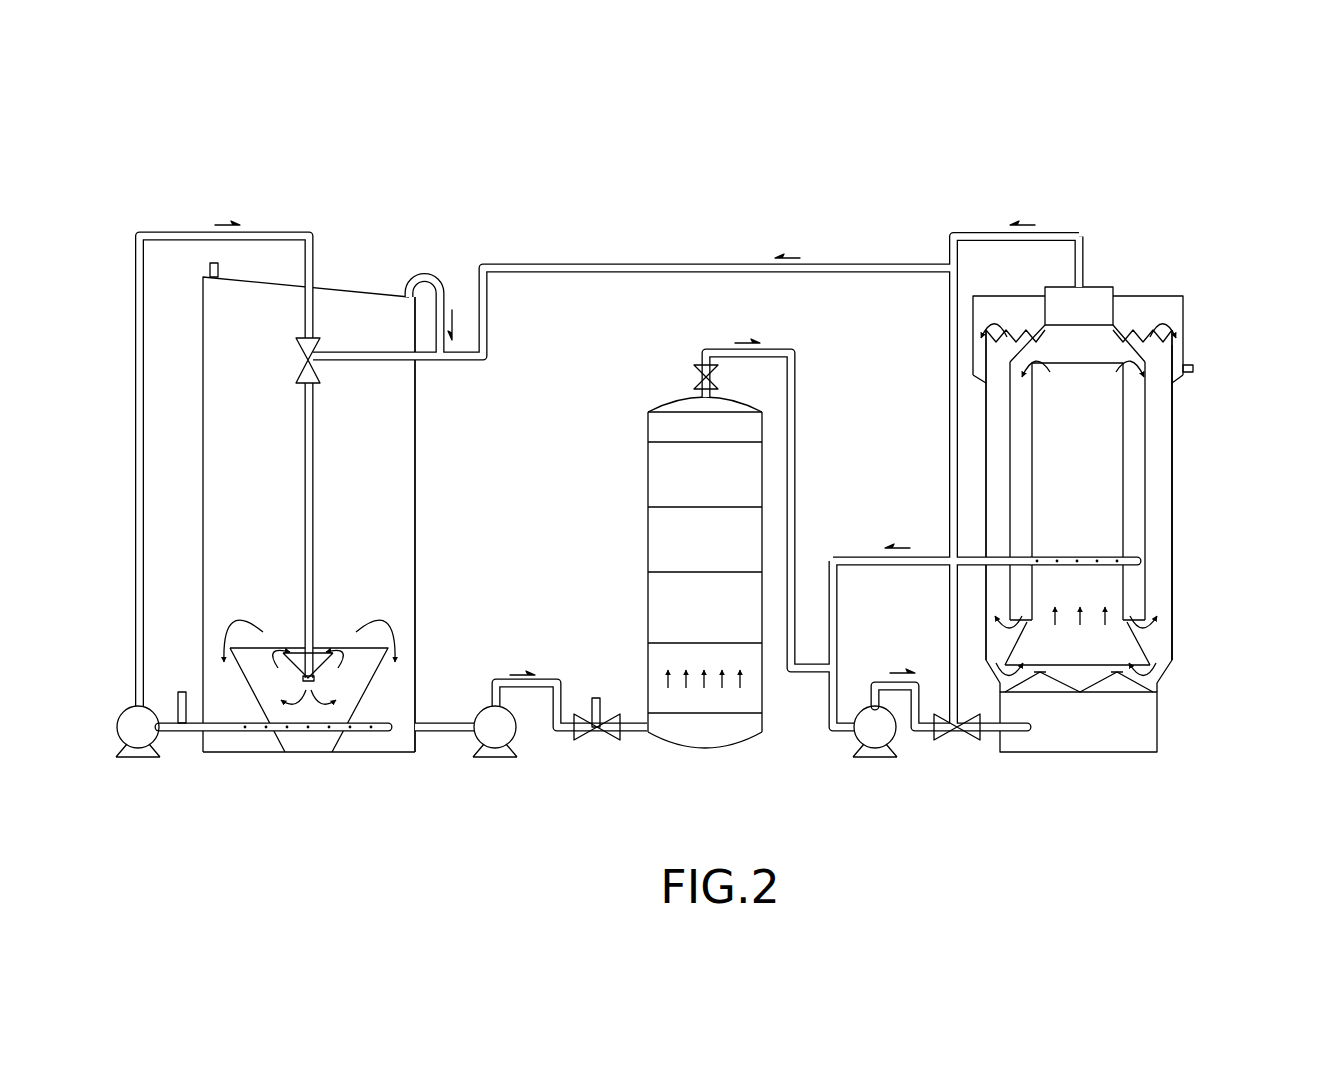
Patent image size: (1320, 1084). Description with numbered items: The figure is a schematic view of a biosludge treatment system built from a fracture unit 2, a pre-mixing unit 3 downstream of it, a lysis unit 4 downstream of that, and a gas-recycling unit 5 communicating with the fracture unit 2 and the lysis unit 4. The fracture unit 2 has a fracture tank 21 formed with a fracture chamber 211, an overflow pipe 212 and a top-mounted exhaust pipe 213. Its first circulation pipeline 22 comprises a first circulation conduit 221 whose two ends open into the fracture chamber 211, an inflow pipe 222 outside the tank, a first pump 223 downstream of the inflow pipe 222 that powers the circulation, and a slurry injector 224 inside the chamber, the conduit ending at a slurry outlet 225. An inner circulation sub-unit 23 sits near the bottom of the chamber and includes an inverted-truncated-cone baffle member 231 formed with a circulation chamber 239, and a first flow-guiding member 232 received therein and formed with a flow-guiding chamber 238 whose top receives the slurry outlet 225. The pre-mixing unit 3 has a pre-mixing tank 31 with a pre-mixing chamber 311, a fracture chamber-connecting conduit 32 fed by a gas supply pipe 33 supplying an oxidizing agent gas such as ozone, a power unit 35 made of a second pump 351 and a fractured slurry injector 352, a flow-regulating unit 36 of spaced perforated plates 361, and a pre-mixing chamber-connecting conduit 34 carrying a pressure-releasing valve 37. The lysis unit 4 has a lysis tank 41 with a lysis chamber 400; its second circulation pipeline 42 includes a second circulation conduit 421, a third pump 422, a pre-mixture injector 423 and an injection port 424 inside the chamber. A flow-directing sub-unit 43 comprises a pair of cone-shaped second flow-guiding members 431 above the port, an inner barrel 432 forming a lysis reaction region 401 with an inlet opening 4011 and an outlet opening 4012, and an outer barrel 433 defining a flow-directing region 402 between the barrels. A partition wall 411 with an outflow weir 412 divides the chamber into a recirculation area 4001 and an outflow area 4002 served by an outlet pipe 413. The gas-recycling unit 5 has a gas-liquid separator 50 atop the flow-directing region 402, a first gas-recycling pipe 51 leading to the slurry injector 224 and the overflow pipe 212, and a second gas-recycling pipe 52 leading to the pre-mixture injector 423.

The fracture unit 2 is at (434, 583).
The fracture tank 21 is at (417, 508).
The fracture chamber 211 is at (416, 542).
The overflow pipe 212 is at (424, 273).
The exhaust pipe 213 is at (210, 270).
The first circulation pipeline 22 is at (294, 212).
The first circulation conduit 221 is at (268, 232).
The inflow pipe 222 is at (181, 692).
The first pump 223 is at (142, 748).
The slurry injector 224 is at (322, 370).
The slurry outlet 225 is at (303, 680).
The inner circulation sub-unit 23 is at (315, 758).
The baffle member 231 is at (282, 737).
The first flow-guiding member 232 is at (335, 652).
The flow-guiding chamber 238 is at (320, 652).
The circulation chamber 239 is at (344, 708).
The pre-mixing unit 3 is at (632, 377).
The pre-mixing tank 31 is at (648, 538).
The pre-mixing chamber 311 is at (663, 523).
The fracture chamber-connecting conduit 32 is at (541, 680).
The gas supply pipe 33 is at (597, 697).
The pre-mixing chamber-connecting conduit 34 is at (797, 370).
The power unit 35 is at (546, 755).
The second pump 351 is at (491, 748).
The fractured slurry injector 352 is at (605, 736).
The flow-regulating unit 36 is at (724, 720).
The perforated plates 361 is at (670, 642).
The pressure-releasing valve 37 is at (694, 374).
The lysis unit 4 is at (1192, 257).
The lysis chamber 400 is at (1128, 723).
The recirculation area 4001 is at (1160, 483).
The outflow area 4002 is at (1180, 298).
The lysis reaction region 401 is at (1128, 648).
The inlet opening 4011 is at (1095, 668).
The outlet opening 4012 is at (1088, 362).
The flow-directing region 402 is at (1137, 508).
The lysis tank 41 is at (1172, 453).
The partition wall 411 is at (1172, 345).
The outflow weir 412 is at (1162, 330).
The outlet pipe 413 is at (1192, 374).
The second circulation pipeline 42 is at (866, 537).
The second circulation conduit 421 is at (896, 566).
The third pump 422 is at (874, 748).
The pre-mixture injector 423 is at (962, 736).
The injection port 424 is at (1030, 732).
The flow-directing sub-unit 43 is at (1156, 408).
The second flow-guiding members 431 is at (1157, 688).
The inner barrel 432 is at (1125, 577).
The outer barrel 433 is at (1147, 540).
The gas-recycling unit 5 is at (967, 218).
The gas-liquid separator 50 is at (1096, 290).
The first gas-recycling pipe 51 is at (875, 263).
The second gas-recycling pipe 52 is at (1056, 233).